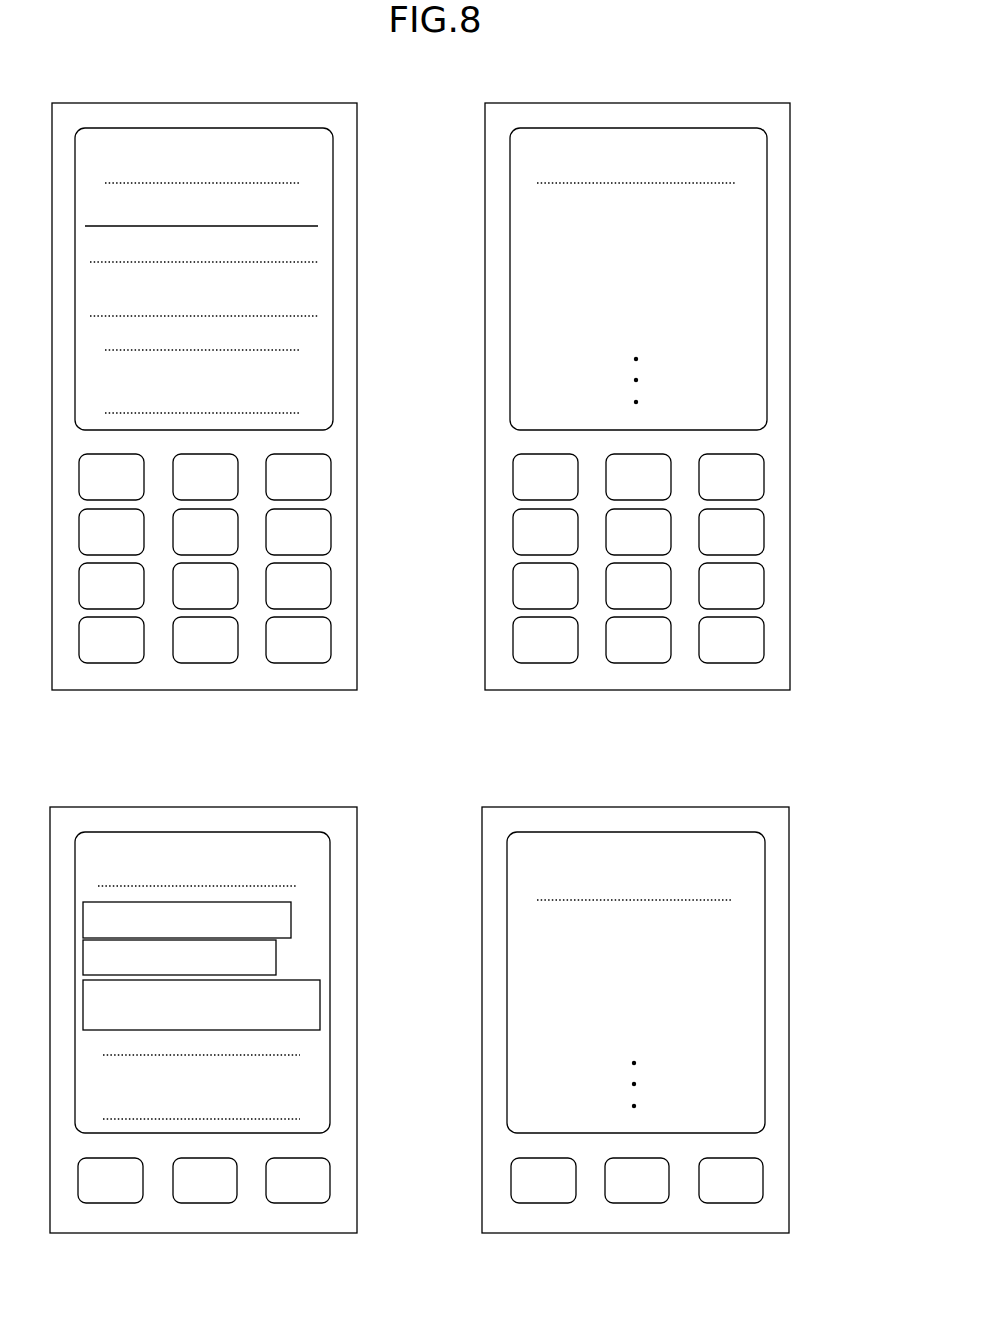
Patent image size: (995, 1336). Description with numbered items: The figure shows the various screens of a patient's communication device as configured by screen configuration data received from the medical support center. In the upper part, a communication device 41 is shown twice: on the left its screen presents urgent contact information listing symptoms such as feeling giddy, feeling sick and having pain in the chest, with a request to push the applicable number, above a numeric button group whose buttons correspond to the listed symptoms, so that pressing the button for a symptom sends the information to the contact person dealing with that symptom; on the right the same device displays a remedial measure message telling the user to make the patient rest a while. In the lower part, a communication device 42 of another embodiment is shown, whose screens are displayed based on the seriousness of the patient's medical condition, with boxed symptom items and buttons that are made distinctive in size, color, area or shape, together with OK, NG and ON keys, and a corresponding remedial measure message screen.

The communication device 41 is at (460, 369).
The communication device 42 is at (459, 992).